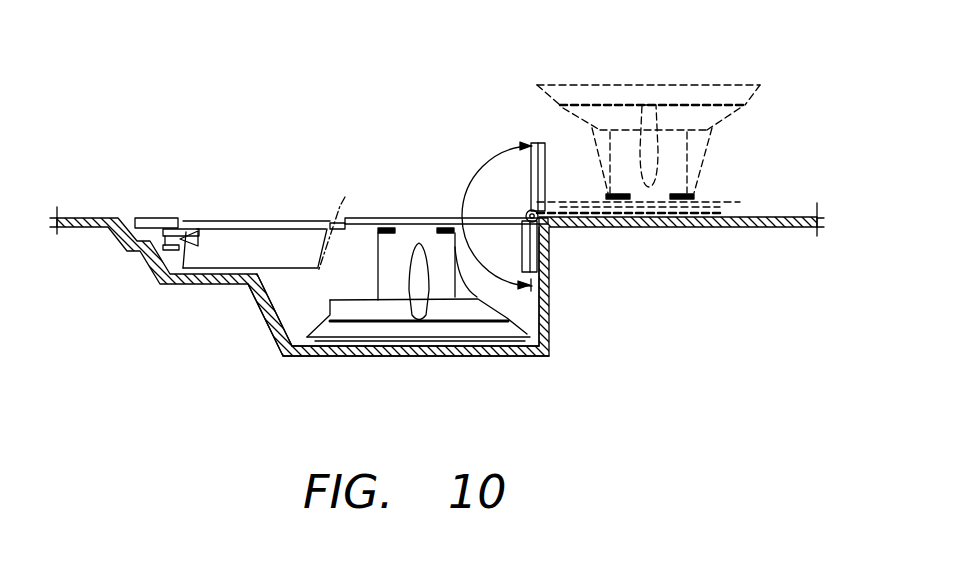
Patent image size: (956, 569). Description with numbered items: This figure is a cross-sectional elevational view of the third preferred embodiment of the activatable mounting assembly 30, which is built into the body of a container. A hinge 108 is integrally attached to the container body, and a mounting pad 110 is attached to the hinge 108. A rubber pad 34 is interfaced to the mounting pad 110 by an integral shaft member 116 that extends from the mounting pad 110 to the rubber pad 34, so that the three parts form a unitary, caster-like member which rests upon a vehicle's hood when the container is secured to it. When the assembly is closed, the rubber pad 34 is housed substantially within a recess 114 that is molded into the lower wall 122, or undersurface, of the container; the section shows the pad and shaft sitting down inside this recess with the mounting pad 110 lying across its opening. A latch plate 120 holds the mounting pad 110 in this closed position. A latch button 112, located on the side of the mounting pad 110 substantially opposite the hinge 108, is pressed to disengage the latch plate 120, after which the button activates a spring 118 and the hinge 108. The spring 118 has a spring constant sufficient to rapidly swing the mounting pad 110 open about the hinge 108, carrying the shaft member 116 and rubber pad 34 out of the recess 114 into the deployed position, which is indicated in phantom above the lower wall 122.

The activatable mounting assembly 30 is at (178, 92).
The rubber pad 34 is at (353, 338).
The hinge 108 is at (542, 150).
The mounting pad 110 is at (430, 184).
The latch button 112 is at (155, 215).
The recess 114 is at (297, 312).
The integral shaft member 116 is at (393, 262).
The spring 118 is at (525, 215).
The latch plate 120 is at (345, 188).
The lower wall 122 is at (473, 357).